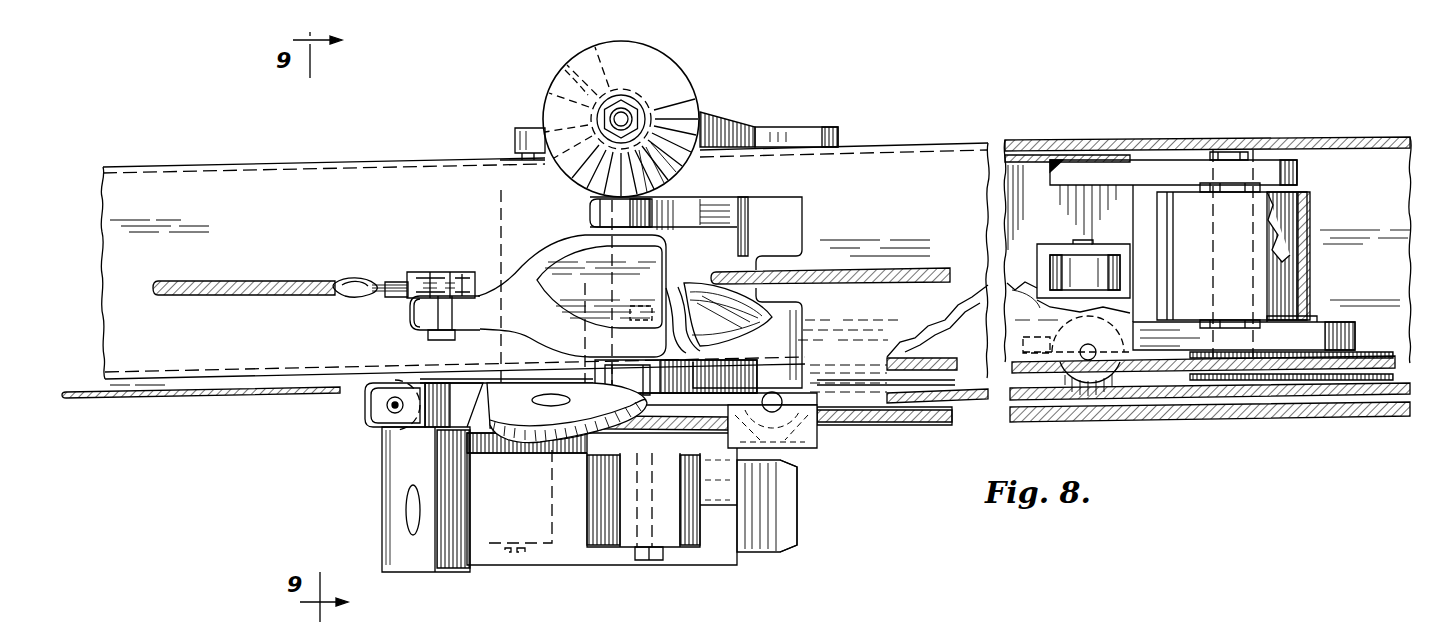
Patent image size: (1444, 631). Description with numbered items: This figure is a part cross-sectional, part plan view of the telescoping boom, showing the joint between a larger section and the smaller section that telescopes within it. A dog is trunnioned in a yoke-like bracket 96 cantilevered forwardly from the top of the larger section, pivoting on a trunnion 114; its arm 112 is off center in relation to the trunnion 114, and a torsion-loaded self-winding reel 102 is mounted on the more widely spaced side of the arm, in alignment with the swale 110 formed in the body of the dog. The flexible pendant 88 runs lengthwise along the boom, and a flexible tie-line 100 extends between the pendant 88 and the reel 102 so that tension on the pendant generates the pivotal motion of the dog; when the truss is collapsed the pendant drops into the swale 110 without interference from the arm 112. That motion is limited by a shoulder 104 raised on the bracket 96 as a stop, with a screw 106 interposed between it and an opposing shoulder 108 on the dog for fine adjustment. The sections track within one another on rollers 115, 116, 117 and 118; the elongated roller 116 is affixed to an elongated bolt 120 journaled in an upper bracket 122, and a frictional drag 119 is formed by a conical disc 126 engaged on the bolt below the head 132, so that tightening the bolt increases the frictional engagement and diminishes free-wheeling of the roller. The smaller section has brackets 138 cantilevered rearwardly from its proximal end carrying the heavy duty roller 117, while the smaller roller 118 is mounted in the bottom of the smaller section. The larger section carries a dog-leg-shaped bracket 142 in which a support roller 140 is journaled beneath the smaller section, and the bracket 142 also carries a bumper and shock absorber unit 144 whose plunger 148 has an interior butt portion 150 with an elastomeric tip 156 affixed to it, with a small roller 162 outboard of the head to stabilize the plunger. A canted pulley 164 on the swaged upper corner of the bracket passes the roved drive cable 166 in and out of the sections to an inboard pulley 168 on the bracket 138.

The flexible pendant 88 is at (241, 282).
The yoke-like bracket 96 is at (740, 190).
The flexible tie-line 100 is at (388, 298).
The torsion-loaded self-winding reel 102 is at (456, 270).
The shoulder 104 is at (683, 298).
The screw 106 is at (630, 314).
The opposing shoulder 108 is at (720, 331).
The swale 110 is at (598, 262).
The arm 112 is at (470, 320).
The trunnion 114 is at (592, 210).
The roller 115 is at (806, 440).
The elongated roller 116 is at (566, 70).
The heavy duty roller 117 is at (1290, 283).
The smaller roller 118 is at (1064, 262).
The frictional drag 119 is at (645, 38).
The elongated bolt 120 is at (626, 113).
The upper bracket 122 is at (718, 112).
The conical disc 126 is at (566, 98).
The head 132 is at (645, 100).
The bracket 138 is at (1166, 170).
The roller 140 is at (500, 189).
The dog-leg-shaped bracket 142 is at (514, 138).
The bumper and shock absorber unit 144 is at (662, 572).
The plunger 148 is at (378, 518).
The butt portion 150 is at (768, 540).
The elastomeric tip 156 is at (795, 528).
The small roller 162 is at (393, 414).
The canted pulley 164 is at (525, 412).
The roved drive cable 166 is at (917, 426).
The inboard pulley 168 is at (1368, 352).